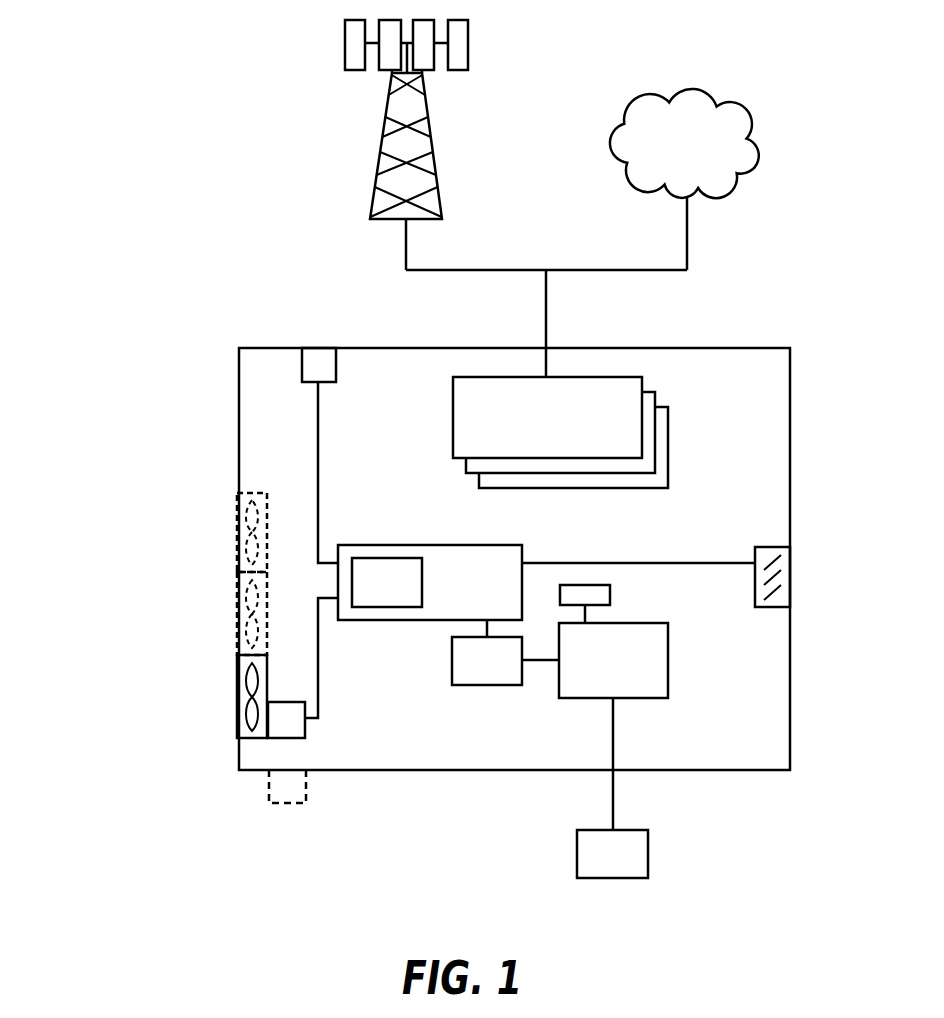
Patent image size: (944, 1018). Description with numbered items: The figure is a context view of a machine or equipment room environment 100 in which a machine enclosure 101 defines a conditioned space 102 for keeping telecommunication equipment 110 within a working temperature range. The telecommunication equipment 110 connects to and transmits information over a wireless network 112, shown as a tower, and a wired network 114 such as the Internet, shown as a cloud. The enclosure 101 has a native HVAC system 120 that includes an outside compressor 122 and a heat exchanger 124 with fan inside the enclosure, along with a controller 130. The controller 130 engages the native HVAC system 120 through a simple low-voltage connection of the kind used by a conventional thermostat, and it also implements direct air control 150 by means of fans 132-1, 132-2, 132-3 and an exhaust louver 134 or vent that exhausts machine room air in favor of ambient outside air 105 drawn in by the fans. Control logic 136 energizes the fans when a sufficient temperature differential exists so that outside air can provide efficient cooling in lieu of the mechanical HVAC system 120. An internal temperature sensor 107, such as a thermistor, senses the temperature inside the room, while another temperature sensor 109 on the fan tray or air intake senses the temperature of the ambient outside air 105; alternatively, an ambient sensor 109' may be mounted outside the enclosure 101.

The machine room environment 100 is at (142, 263).
The machine enclosure 101 is at (790, 370).
The conditioned space 102 is at (303, 423).
The ambient outside air 105 is at (144, 487).
The internal temperature sensor 107 is at (337, 362).
The temperature sensor 109 is at (336, 723).
The ambient sensor 109' is at (289, 828).
The telecommunication equipment 110 is at (453, 420).
The wireless network 112 is at (345, 43).
The wired network 114 is at (709, 161).
The native HVAC system 120 is at (635, 693).
The outside compressor 122 is at (635, 869).
The heat exchanger 124 is at (610, 595).
The controller 130 is at (509, 675).
The exhaust louver 134 is at (790, 575).
The control logic 136 is at (409, 597).
The direct air control 150 is at (488, 613).
The fan 132-1 is at (237, 695).
The fan 132-2 is at (237, 612).
The fan 132-3 is at (237, 532).